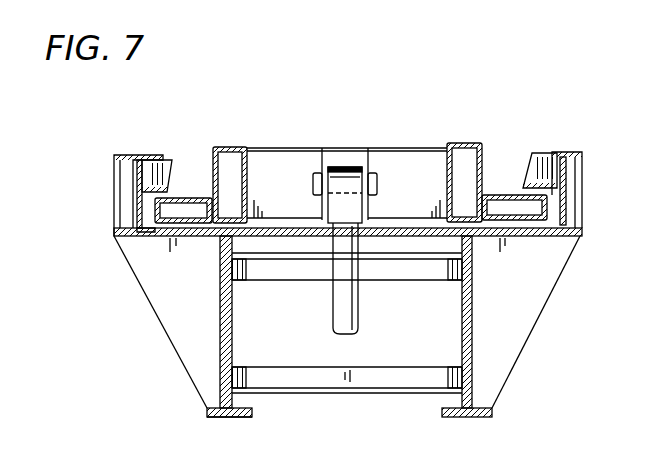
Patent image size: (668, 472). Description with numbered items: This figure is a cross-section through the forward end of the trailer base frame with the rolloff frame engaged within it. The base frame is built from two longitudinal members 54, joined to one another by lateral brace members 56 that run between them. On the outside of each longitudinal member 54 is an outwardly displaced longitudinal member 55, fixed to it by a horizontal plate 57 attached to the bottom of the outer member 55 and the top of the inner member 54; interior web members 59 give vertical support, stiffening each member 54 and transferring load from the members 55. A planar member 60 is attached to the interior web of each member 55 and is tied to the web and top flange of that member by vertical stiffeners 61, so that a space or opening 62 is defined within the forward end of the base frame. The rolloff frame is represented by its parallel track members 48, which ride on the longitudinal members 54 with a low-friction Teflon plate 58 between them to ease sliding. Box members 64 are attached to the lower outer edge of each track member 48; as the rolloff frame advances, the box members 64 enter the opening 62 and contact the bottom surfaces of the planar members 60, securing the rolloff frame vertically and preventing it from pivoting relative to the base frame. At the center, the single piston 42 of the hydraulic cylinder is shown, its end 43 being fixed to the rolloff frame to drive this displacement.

The piston 42 is at (363, 303).
The end of piston 43 is at (340, 166).
The track member 48 is at (232, 147).
The longitudinal member 54 is at (227, 345).
The outwardly displaced longitudinal member 55 is at (138, 154).
The lateral brace member 56 is at (303, 270).
The horizontal plate 57 is at (183, 238).
The Teflon plate 58 is at (263, 218).
The interior web member 59 is at (172, 320).
The planar member 60 is at (168, 188).
The vertical stiffener 61 is at (160, 170).
The opening 62 is at (560, 207).
The box member 64 is at (147, 237).